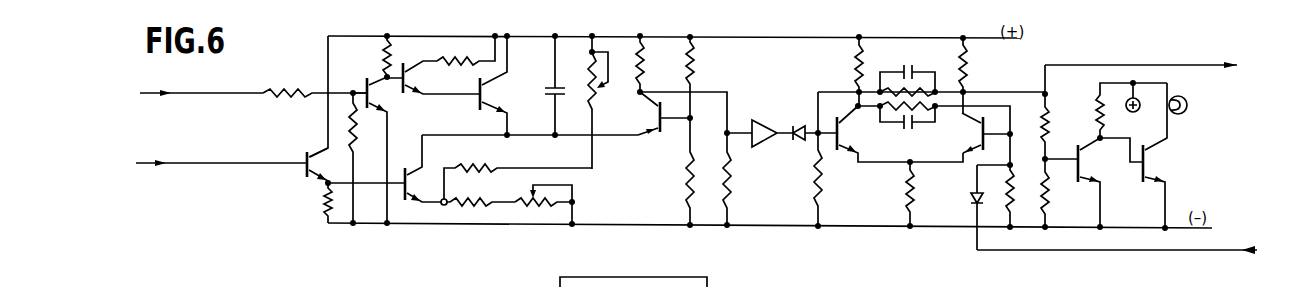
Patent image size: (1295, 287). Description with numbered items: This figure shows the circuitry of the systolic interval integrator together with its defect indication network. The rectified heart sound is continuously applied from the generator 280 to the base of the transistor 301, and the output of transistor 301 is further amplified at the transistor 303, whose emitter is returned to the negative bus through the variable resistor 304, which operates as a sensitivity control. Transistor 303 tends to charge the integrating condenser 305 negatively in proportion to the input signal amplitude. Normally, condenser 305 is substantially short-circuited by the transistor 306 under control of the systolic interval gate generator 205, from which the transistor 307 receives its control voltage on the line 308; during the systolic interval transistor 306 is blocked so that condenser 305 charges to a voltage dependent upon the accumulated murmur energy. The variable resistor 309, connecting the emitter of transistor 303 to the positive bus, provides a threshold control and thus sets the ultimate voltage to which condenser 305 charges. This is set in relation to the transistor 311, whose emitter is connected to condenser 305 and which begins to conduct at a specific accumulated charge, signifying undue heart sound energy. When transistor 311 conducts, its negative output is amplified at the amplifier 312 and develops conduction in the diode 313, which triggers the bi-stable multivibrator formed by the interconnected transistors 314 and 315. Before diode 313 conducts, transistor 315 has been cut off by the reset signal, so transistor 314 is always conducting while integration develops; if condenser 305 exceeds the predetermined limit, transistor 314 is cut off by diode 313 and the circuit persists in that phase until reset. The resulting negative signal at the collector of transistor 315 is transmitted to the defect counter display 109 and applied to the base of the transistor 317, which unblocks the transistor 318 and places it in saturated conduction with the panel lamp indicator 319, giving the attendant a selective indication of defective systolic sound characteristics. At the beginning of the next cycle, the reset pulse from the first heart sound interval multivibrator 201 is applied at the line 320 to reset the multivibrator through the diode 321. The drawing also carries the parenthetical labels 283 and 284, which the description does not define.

The transistor 301 is at (302, 152).
The transistor 303 is at (403, 172).
The variable resistor 304 is at (530, 191).
The integrating condenser 305 is at (547, 95).
The transistor 306 is at (485, 97).
The transistor 307 is at (373, 95).
The line 308 is at (247, 93).
The variable resistor 309 is at (599, 91).
The transistor 311 is at (660, 137).
The amplifier 312 is at (770, 118).
The diode 313 is at (798, 141).
The transistor 314 is at (846, 130).
The transistor 315 is at (975, 143).
The transistor 317 is at (1077, 147).
The transistor 318 is at (1150, 165).
The panel lamp indicator 319 is at (1182, 114).
The line 320 is at (1096, 253).
The diode 321 is at (971, 198).
The defect counter display 109 is at (1166, 56).
The systolic interval gate generator 205 is at (184, 94).
The generator 280 is at (206, 168).
The first heart sound interval multivibrator 201 is at (1130, 253).
The waveform label 283 is at (525, 279).
The waveform label 284 is at (847, 279).